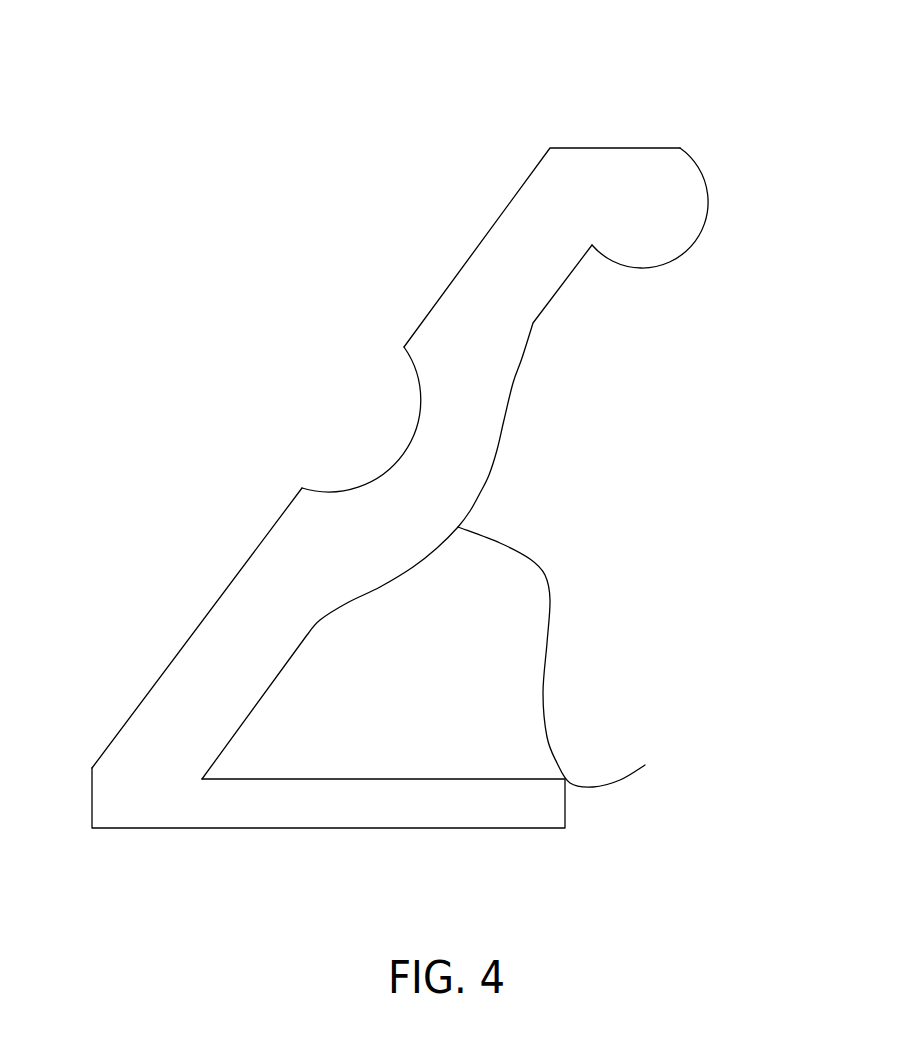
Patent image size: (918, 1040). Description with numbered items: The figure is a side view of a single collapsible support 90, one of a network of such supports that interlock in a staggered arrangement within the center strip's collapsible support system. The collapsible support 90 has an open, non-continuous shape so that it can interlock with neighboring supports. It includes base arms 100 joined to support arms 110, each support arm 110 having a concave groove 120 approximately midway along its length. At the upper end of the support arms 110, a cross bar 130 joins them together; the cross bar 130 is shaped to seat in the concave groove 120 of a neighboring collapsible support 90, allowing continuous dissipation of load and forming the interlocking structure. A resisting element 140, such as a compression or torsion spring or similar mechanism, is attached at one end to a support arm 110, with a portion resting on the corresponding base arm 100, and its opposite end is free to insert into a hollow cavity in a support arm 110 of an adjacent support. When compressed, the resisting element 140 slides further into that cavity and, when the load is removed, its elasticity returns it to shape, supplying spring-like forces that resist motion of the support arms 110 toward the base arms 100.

The collapsible support 90 is at (96, 57).
The base arm 100 is at (453, 790).
The support arm 110 is at (195, 650).
The concave groove 120 is at (407, 442).
The cross bar 130 is at (710, 212).
The resisting element 140 is at (547, 665).